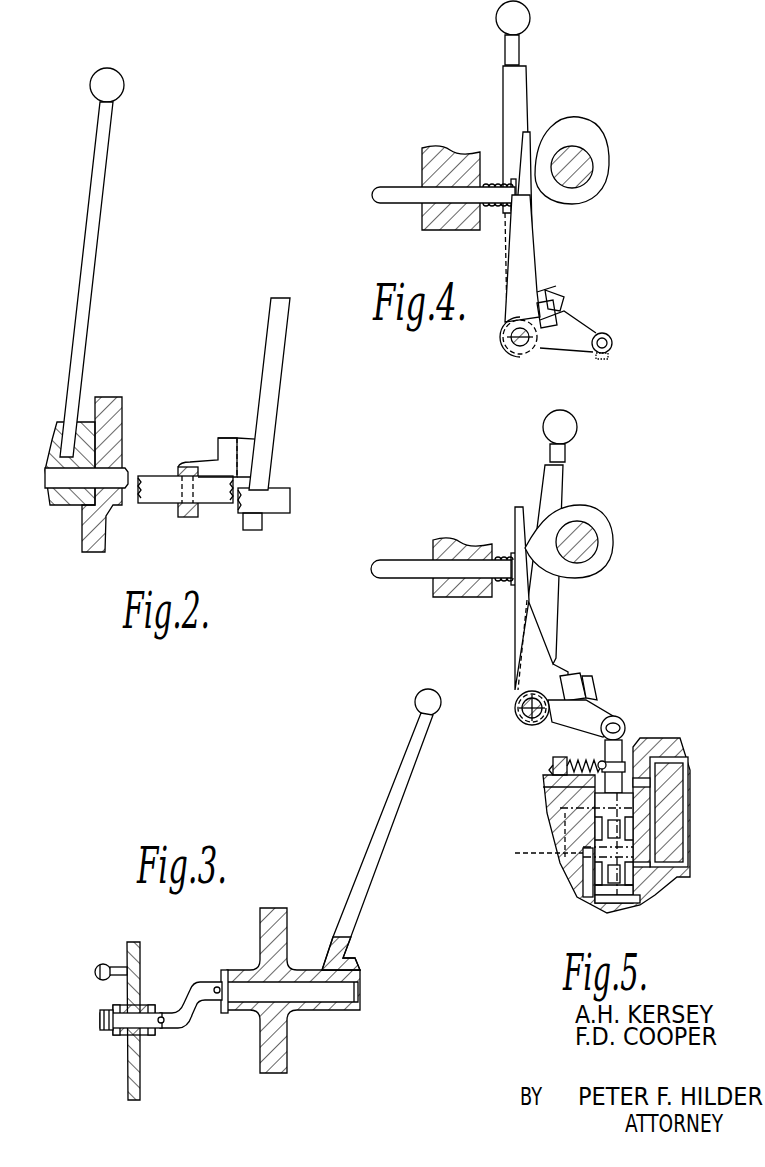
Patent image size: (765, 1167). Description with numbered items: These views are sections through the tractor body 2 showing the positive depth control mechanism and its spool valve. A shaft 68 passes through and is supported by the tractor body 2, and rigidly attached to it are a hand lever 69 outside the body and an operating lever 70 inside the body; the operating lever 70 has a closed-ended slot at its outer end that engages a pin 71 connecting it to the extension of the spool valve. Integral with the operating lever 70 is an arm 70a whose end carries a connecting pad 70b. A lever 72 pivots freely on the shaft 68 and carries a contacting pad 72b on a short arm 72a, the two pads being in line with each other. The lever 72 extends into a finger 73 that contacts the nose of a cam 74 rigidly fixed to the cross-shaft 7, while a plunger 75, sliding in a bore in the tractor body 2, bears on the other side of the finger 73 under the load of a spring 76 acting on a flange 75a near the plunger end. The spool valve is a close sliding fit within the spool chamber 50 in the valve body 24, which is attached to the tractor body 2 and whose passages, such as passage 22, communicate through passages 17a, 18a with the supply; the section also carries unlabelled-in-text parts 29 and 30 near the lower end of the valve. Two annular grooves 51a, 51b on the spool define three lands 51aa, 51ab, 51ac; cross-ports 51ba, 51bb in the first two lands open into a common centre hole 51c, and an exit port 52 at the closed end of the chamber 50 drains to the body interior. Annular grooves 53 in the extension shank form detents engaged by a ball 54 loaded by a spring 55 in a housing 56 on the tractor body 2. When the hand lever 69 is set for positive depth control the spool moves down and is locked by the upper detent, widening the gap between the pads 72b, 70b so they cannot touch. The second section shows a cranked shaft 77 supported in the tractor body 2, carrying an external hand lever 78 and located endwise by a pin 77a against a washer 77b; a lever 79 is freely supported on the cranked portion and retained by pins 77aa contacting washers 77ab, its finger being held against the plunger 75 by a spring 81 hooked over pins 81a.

In FIG. 4, the tractor body 2 is at (432, 155).
In FIG. 5, the tractor body 2 is at (443, 547).
In FIG. 3, the tractor body 2 is at (270, 913).
In FIG. 4, the cross-shaft 7 is at (585, 163).
In FIG. 5, the cross-shaft 7 is at (590, 548).
In FIG. 5, the passage 17a is at (688, 783).
In FIG. 5, the passage 18a is at (688, 760).
In FIG. 5, the passage 22 is at (688, 815).
In FIG. 5, the valve body 24 is at (690, 848).
In FIG. 5, the port 29 is at (575, 870).
In FIG. 5, the port 30 is at (596, 890).
In FIG. 5, the spool chamber 50 is at (616, 903).
In FIG. 5, the annular groove 51a is at (600, 828).
In FIG. 5, the land 51aa is at (560, 786).
In FIG. 5, the land 51ab is at (584, 870).
In FIG. 5, the land 51ac is at (588, 895).
In FIG. 5, the annular groove 51b is at (602, 878).
In FIG. 5, the cross-port 51ba is at (560, 808).
In FIG. 5, the cross-port 51bb is at (530, 837).
In FIG. 5, the centre hole 51c is at (628, 897).
In FIG. 5, the exit port 52 is at (640, 899).
In FIG. 5, the annular grooves 53 is at (622, 740).
In FIG. 5, the ball 54 is at (590, 760).
In FIG. 5, the spring 55 is at (556, 759).
In FIG. 5, the housing 56 is at (552, 770).
In FIG. 2, the shaft 68 is at (270, 497).
In FIG. 4, the shaft 68 is at (510, 347).
In FIG. 5, the shaft 68 is at (520, 712).
In FIG. 2, the hand lever 69 is at (84, 305).
In FIG. 4, the hand lever 69 is at (520, 83).
In FIG. 5, the hand lever 69 is at (558, 480).
In FIG. 4, the operating lever 70 is at (600, 338).
In FIG. 5, the operating lever 70 is at (615, 716).
In FIG. 2, the arm 70a is at (185, 462).
In FIG. 4, the arm 70a is at (570, 330).
In FIG. 5, the arm 70a is at (590, 706).
In FIG. 4, the connecting pad 70b is at (562, 300).
In FIG. 5, the connecting pad 70b is at (590, 678).
In FIG. 4, the pin 71 is at (612, 340).
In FIG. 5, the pin 71 is at (622, 722).
In FIG. 2, the lever 72 is at (255, 528).
In FIG. 4, the lever 72 is at (515, 270).
In FIG. 5, the lever 72 is at (514, 668).
In FIG. 2, the short arm 72a is at (240, 442).
In FIG. 4, the short arm 72a is at (540, 296).
In FIG. 5, the short arm 72a is at (543, 660).
In FIG. 2, the contacting pad 72b is at (220, 438).
In FIG. 4, the contacting pad 72b is at (552, 300).
In FIG. 5, the contacting pad 72b is at (572, 675).
In FIG. 2, the finger 73 is at (280, 365).
In FIG. 4, the finger 73 is at (527, 134).
In FIG. 5, the finger 73 is at (519, 507).
In FIG. 4, the cam 74 is at (580, 135).
In FIG. 5, the cam 74 is at (600, 520).
In FIG. 4, the plunger 75 is at (400, 193).
In FIG. 5, the plunger 75 is at (400, 567).
In FIG. 4, the flange 75a is at (510, 205).
In FIG. 5, the flange 75a is at (513, 585).
In FIG. 4, the spring 76 is at (498, 182).
In FIG. 5, the spring 76 is at (506, 557).
In FIG. 3, the cranked shaft 77 is at (192, 1022).
In FIG. 3, the pin 77a is at (226, 975).
In FIG. 3, the pins 77aa is at (100, 1020).
In FIG. 3, the washers 77ab is at (113, 1008).
In FIG. 3, the washer 77b is at (224, 1013).
In FIG. 3, the hand lever 78 is at (380, 830).
In FIG. 3, the lever 79 is at (127, 1070).
In FIG. 3, the spring 81 is at (103, 964).
In FIG. 3, the pins 81a is at (115, 967).